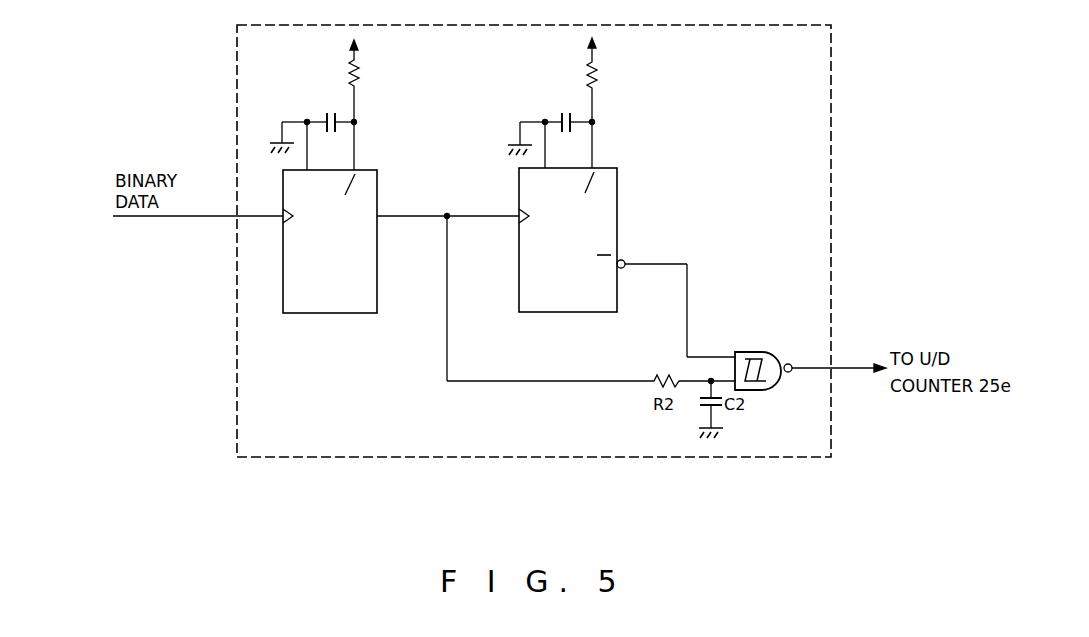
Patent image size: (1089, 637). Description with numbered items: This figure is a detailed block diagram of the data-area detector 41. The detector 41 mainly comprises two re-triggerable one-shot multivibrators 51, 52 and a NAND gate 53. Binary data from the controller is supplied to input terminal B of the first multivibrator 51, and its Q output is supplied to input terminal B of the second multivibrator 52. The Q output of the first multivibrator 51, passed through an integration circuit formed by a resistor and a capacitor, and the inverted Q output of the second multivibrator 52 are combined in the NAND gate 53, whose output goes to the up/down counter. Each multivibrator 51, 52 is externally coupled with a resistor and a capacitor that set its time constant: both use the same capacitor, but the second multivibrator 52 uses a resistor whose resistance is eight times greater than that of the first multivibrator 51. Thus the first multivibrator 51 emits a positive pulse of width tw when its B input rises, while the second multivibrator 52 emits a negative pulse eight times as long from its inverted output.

The data-area detector 41 is at (593, 458).
The re-triggerable one-shot multivibrator 51 is at (283, 292).
The re-triggerable one-shot multivibrator 52 is at (617, 189).
The NAND gate 53 is at (757, 350).